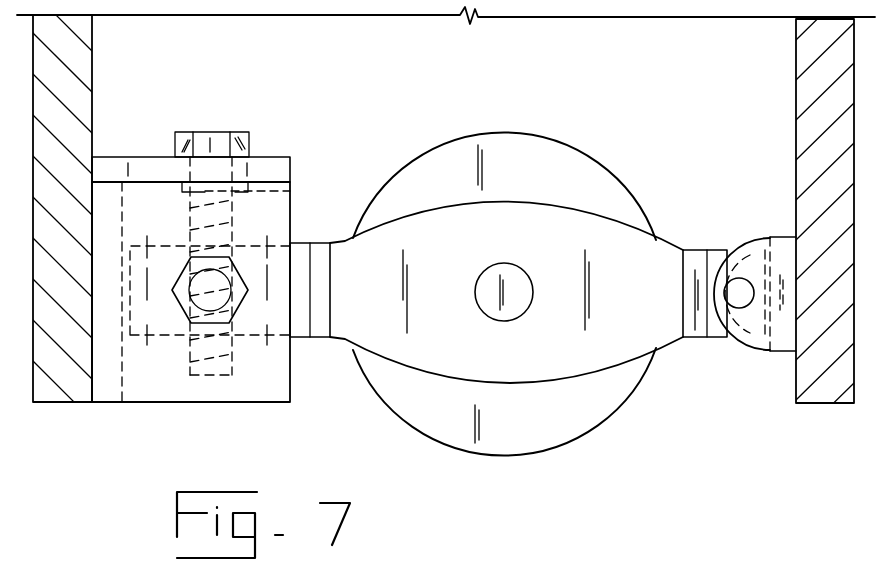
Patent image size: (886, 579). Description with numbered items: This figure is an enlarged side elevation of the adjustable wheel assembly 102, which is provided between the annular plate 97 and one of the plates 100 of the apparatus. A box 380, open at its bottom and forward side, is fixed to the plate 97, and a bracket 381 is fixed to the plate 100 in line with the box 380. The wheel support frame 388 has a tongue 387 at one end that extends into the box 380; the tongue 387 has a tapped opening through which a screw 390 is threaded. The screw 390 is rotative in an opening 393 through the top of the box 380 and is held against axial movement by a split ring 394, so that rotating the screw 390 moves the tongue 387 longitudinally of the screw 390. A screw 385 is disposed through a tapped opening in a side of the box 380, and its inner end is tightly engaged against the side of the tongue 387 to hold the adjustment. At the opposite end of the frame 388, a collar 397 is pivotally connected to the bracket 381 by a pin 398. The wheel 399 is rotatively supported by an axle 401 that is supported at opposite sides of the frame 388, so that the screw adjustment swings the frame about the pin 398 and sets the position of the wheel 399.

The annular plate 97 is at (92, 64).
The plate 100 is at (796, 62).
The adjustable wheel assembly 102 is at (512, 90).
The box 380 is at (143, 157).
The bracket 381 is at (760, 235).
The screw 385 is at (181, 313).
The tongue 387 is at (298, 340).
The wheel support frame 388 is at (513, 383).
The screw 390 is at (218, 132).
The opening 393 is at (250, 165).
The split ring 394 is at (296, 190).
The collar 397 is at (718, 250).
The pin 398 is at (732, 312).
The wheel 399 is at (583, 150).
The axle 401 is at (521, 268).